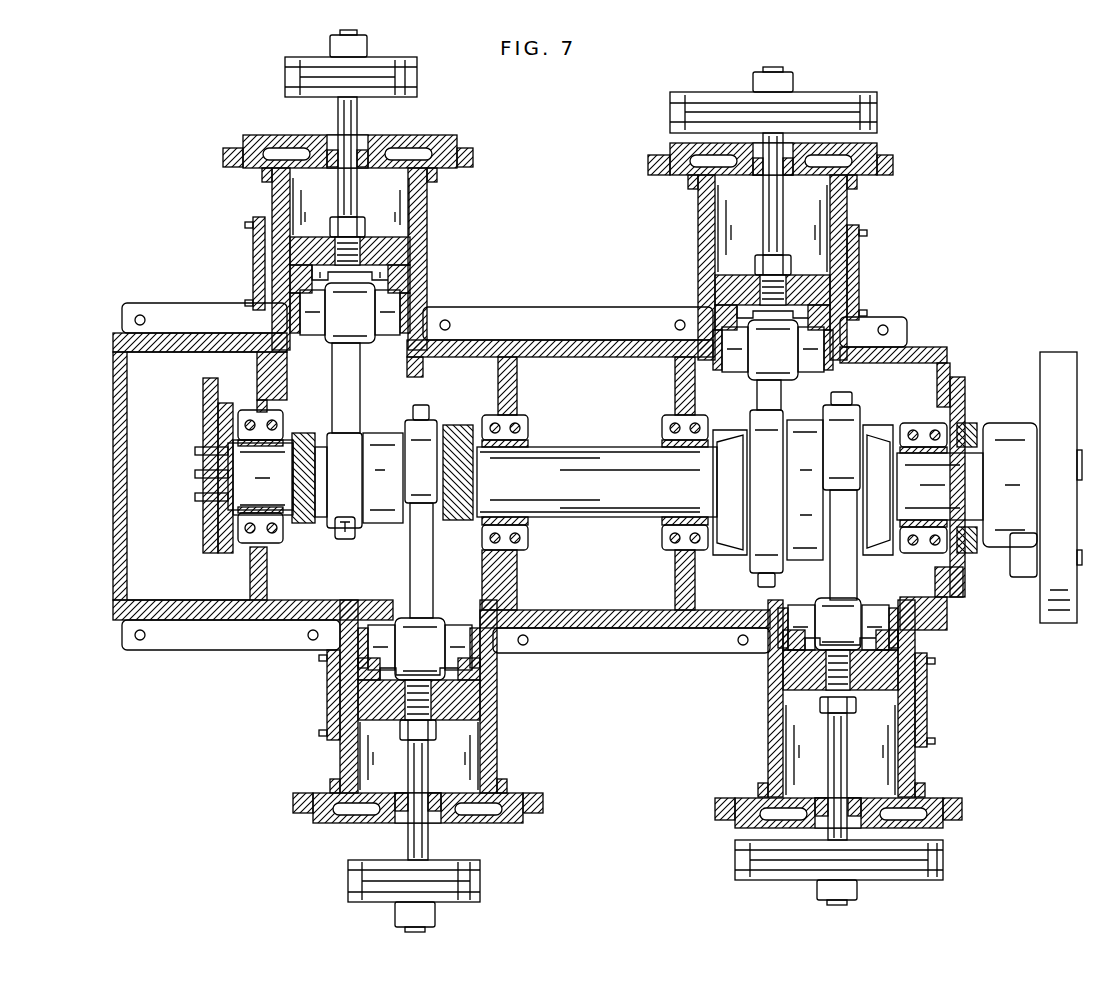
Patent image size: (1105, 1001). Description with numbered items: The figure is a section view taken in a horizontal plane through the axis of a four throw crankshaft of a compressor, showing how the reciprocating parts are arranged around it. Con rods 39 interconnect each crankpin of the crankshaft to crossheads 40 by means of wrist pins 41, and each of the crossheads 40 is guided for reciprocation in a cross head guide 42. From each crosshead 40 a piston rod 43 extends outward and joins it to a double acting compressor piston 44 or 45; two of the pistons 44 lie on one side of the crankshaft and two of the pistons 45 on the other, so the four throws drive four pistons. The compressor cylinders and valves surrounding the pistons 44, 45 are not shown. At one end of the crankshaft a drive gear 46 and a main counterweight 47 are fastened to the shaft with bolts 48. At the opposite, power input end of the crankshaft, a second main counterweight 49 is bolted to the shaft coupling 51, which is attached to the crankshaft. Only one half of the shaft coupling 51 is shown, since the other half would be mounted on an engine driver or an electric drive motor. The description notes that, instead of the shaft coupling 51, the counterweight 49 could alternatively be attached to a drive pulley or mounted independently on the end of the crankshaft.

The con rod 39 is at (345, 397).
The crosshead 40 is at (400, 257).
The wrist pin 41 is at (390, 305).
The cross head guide 42 is at (428, 210).
The piston rod 43 is at (350, 115).
The double acting compressor piston 44 is at (300, 76).
The double acting compressor piston 45 is at (870, 112).
The drive gear 46 is at (225, 556).
The main counterweight 47 is at (207, 386).
The bolt 48 is at (200, 452).
The second main counterweight 49 is at (1020, 560).
The shaft coupling 51 is at (1055, 378).